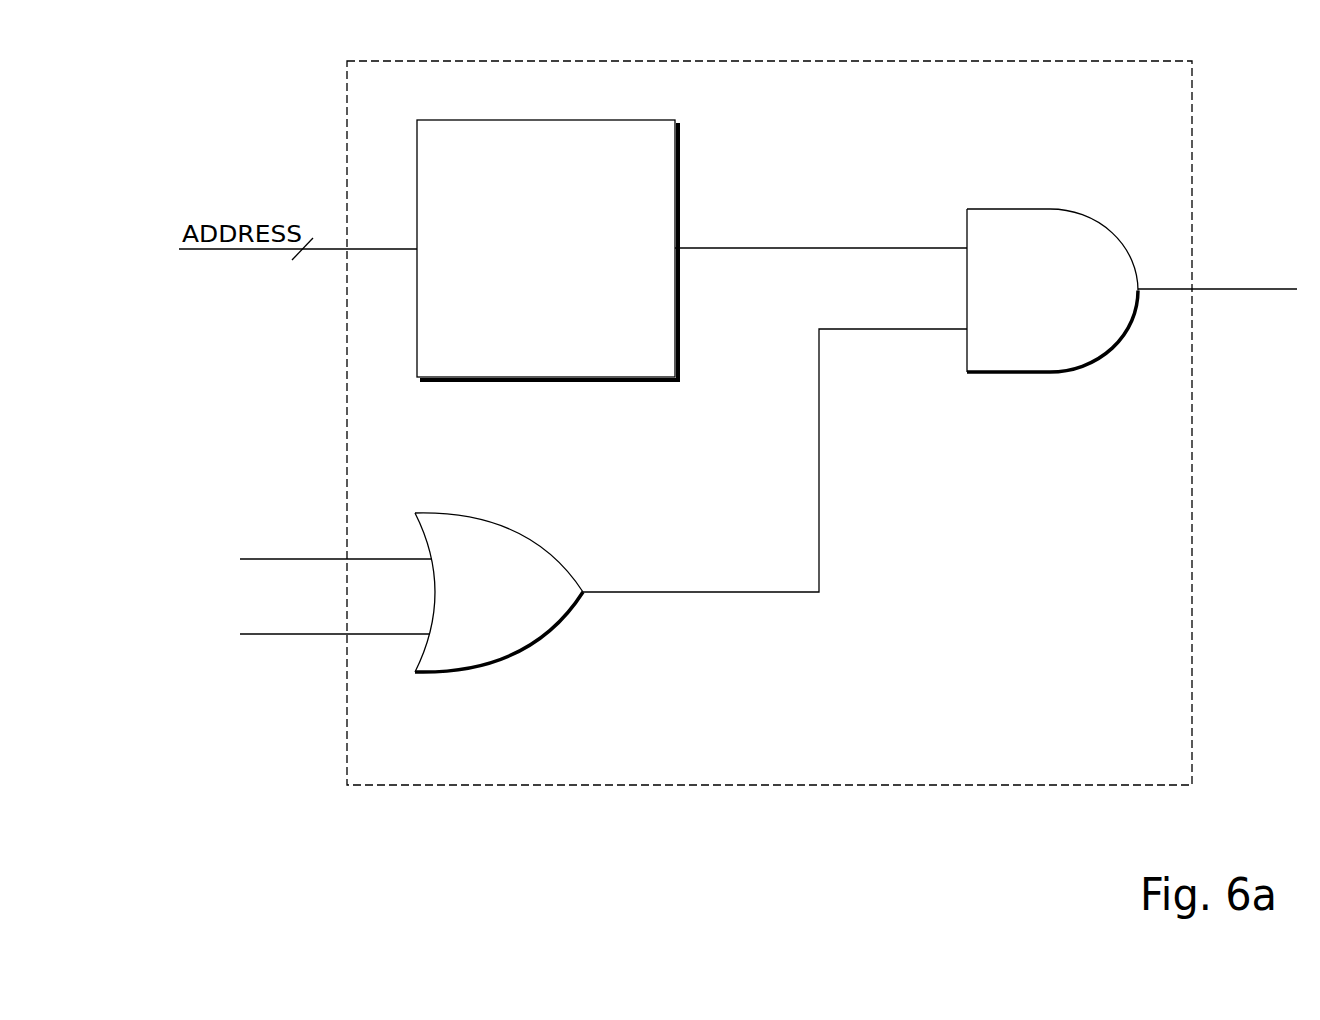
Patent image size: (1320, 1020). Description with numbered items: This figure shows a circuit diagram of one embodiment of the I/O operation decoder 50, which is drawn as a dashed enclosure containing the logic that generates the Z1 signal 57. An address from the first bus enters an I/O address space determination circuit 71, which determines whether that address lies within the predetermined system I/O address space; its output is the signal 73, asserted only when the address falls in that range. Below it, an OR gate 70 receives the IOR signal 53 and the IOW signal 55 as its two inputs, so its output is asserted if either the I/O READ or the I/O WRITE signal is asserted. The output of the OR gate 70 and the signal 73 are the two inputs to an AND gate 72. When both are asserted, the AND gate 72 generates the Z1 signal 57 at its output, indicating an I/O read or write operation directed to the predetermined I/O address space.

The I/O operation decoder 50 is at (1159, 97).
The I/O address space determination circuit 71 is at (560, 338).
The signal 73 is at (821, 233).
The AND gate 72 is at (1066, 302).
The Z1 signal 57 is at (1217, 274).
The OR gate 70 is at (514, 603).
The IOR signal 53 is at (317, 554).
The IOW signal 55 is at (316, 629).